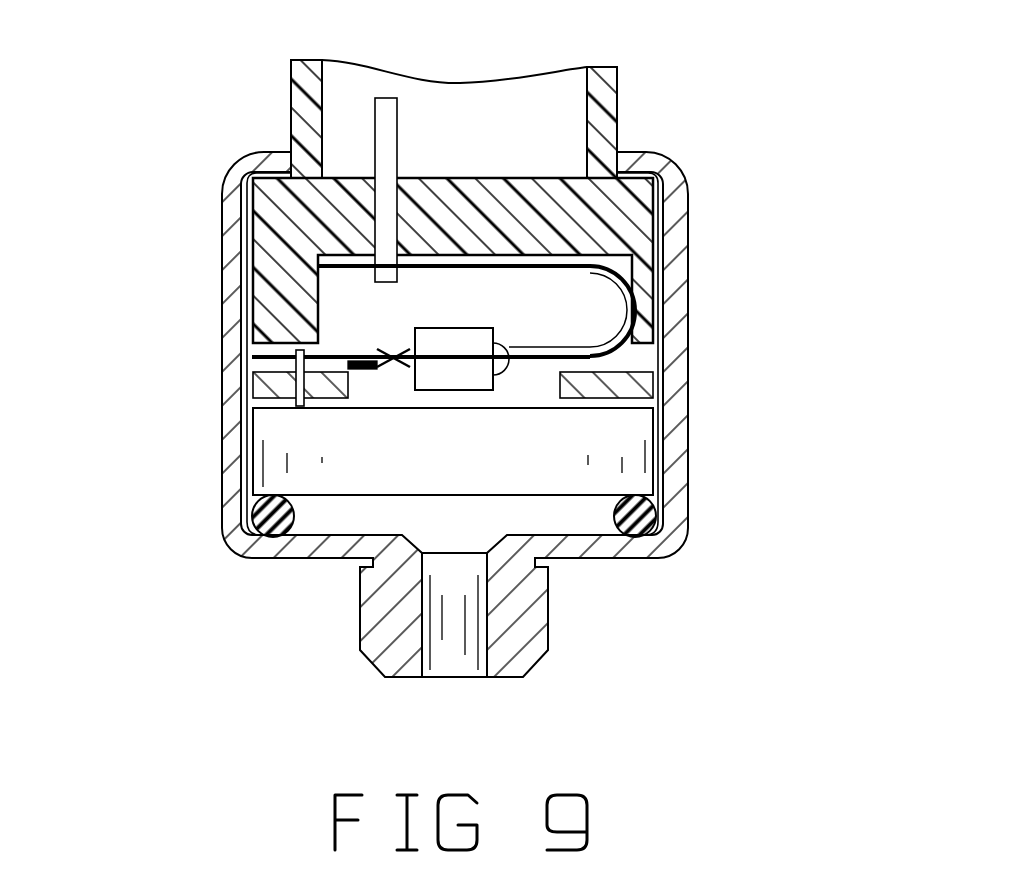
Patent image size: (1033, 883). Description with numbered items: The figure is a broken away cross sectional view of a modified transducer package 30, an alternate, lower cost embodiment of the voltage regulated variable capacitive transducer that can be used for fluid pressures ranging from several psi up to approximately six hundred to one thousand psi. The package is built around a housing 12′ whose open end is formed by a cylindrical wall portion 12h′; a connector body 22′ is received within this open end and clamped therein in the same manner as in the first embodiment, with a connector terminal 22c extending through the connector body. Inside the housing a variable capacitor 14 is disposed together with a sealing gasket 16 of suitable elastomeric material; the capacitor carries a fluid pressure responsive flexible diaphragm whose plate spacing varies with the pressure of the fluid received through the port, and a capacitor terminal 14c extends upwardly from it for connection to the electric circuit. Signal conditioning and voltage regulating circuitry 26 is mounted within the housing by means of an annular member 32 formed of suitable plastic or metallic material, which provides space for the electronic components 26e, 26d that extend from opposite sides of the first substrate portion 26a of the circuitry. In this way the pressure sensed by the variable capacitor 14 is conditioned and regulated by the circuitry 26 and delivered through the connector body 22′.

The modified transducer package 30 is at (169, 152).
The connector pin terminal 22c is at (383, 108).
The connector body 22′ is at (615, 113).
The signal conditioning and voltage regulating circuitry 26 is at (646, 263).
The first substrate portion 26a is at (395, 358).
The electronic component 26e is at (513, 327).
The electronic component 26d is at (464, 405).
The cylindrical wall portion 12h′ is at (677, 332).
The annular member 32 is at (637, 383).
The capacitor terminal 14c is at (300, 405).
The variable capacitor 14 is at (262, 458).
The housing 12′ is at (707, 458).
The sealing gasket 16 is at (647, 520).